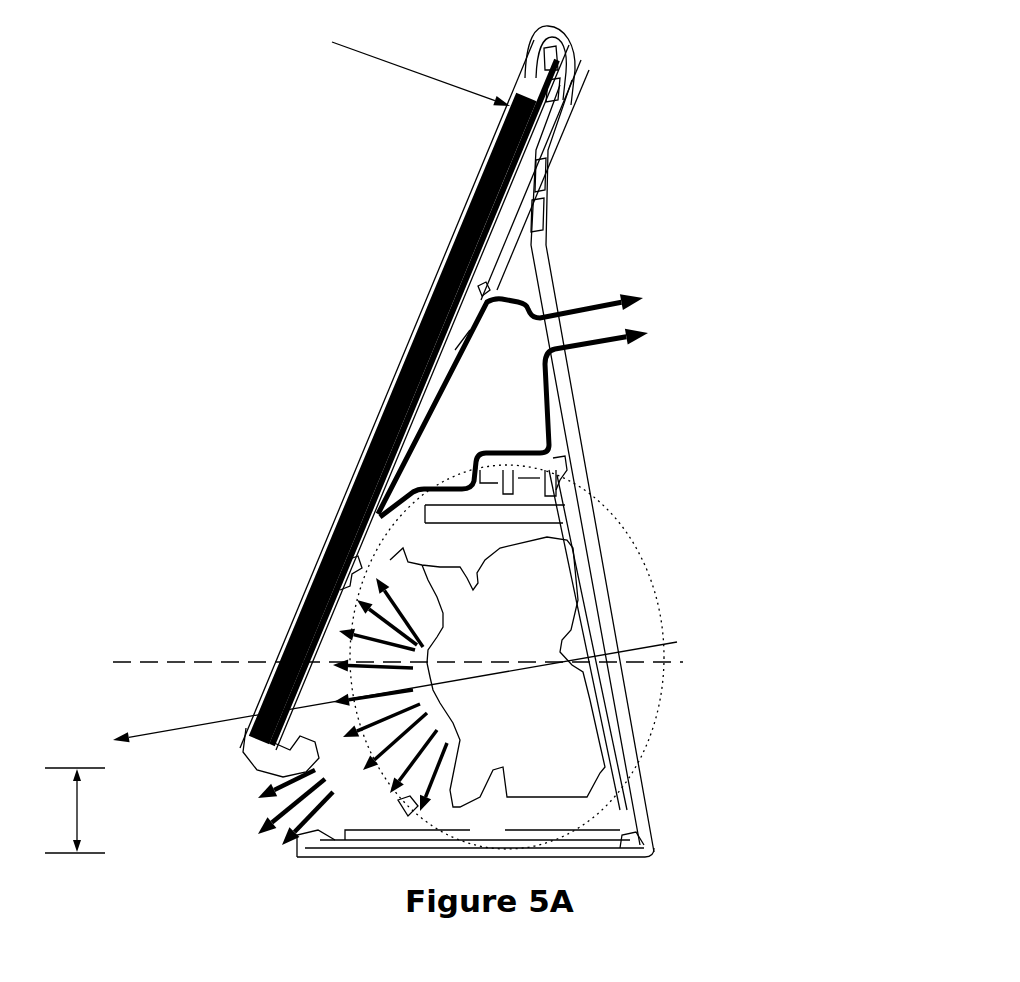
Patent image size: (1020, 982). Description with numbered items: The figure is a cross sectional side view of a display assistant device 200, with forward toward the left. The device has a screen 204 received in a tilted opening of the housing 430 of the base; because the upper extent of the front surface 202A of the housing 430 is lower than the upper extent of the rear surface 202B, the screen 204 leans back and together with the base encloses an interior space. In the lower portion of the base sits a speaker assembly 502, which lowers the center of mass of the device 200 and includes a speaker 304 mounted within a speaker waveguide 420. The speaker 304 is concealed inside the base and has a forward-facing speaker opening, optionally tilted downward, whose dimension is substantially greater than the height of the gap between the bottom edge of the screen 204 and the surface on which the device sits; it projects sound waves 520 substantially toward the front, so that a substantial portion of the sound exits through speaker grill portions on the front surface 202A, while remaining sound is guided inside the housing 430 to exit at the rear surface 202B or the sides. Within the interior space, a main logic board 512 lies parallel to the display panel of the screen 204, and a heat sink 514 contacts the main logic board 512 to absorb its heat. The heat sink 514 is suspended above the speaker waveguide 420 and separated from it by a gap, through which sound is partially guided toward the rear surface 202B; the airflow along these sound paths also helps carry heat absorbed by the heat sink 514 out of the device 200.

The display assistant device 200 is at (201, 56).
The screen 204 is at (562, 76).
The main logic board 512 is at (482, 290).
The heat sink 514 is at (487, 376).
The housing 430 is at (569, 440).
The speaker waveguide 420 is at (559, 510).
The speaker assembly 502 is at (651, 598).
The speaker 304 is at (497, 672).
The sound waves 520 is at (352, 600).
The front surface 202A is at (285, 769).
The rear surface 202B is at (655, 808).